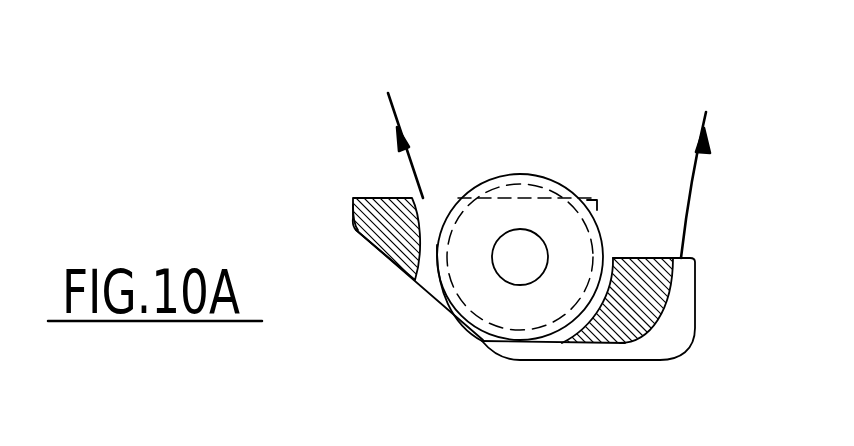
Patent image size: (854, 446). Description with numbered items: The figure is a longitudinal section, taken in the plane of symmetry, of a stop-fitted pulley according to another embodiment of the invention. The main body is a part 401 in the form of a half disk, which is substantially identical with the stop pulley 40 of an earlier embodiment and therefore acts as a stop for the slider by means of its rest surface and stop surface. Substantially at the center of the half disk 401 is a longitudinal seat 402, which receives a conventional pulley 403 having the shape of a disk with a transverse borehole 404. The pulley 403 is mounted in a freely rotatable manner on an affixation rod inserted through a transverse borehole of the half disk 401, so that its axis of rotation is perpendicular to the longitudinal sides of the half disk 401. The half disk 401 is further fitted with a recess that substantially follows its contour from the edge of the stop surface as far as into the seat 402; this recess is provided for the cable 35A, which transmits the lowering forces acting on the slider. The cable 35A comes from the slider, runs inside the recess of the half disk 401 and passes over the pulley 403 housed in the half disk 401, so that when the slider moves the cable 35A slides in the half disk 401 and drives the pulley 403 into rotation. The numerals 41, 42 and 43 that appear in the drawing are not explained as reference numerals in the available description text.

The stop pulley 40 is at (646, 388).
The cradle insert 41 is at (613, 258).
The guide block 42 is at (370, 197).
The side wall 43 is at (682, 293).
The half disk 401 is at (372, 227).
The longitudinal seat 402 is at (425, 283).
The conventional pulley 403 is at (488, 297).
The transverse borehole 404 is at (523, 258).
The cable 35A is at (690, 200).